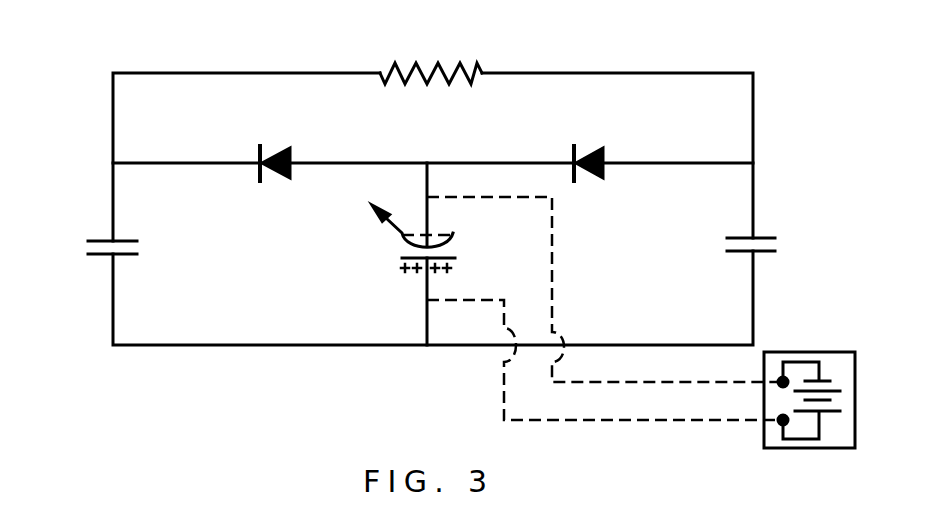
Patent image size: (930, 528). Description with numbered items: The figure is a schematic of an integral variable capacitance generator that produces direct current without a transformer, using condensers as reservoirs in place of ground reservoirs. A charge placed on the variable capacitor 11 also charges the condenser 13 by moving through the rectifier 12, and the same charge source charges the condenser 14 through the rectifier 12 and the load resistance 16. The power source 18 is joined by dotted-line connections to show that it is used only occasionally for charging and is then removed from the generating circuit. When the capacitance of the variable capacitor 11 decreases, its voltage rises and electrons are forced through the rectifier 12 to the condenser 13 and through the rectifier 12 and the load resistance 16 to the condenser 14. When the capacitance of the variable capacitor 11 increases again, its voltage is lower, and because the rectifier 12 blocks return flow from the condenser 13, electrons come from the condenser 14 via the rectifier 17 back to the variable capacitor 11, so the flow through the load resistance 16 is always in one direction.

The variable capacitor 11 is at (392, 248).
The rectifier 12 is at (597, 145).
The condenser 13 is at (773, 232).
The condenser 14 is at (87, 242).
The load resistance 16 is at (442, 63).
The rectifier 17 is at (273, 148).
The power source 18 is at (808, 350).